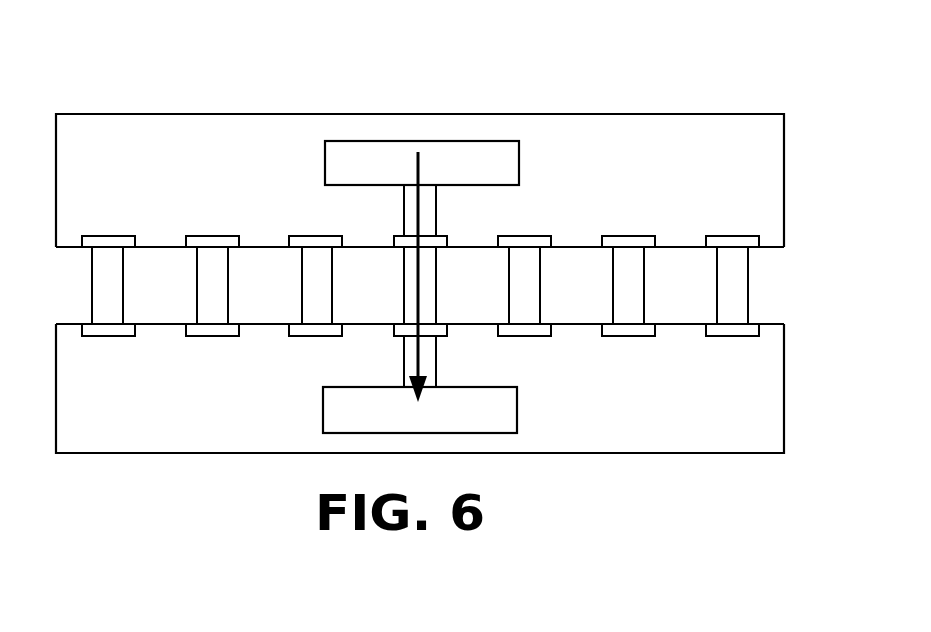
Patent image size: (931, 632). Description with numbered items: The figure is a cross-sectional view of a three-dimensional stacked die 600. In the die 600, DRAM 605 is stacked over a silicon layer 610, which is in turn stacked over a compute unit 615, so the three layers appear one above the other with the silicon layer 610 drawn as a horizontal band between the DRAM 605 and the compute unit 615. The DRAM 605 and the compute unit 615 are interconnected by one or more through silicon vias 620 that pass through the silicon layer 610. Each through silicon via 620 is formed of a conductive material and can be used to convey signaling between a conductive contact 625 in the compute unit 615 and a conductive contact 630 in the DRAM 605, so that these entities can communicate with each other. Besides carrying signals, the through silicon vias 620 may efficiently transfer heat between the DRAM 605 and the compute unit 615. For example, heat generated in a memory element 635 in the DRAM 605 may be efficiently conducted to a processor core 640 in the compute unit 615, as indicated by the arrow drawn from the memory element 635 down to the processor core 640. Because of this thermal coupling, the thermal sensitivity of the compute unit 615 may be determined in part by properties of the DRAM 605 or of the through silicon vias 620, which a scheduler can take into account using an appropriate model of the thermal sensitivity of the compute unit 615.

The three-dimensional stacked die 600 is at (700, 60).
The DRAM 605 is at (762, 151).
The silicon layer 610 is at (784, 299).
The compute unit 615 is at (757, 425).
The through silicon via 620 is at (125, 310).
The conductive contact 625 is at (118, 337).
The conductive contact 630 is at (118, 235).
The memory element 635 is at (325, 165).
The processor core 640 is at (323, 400).